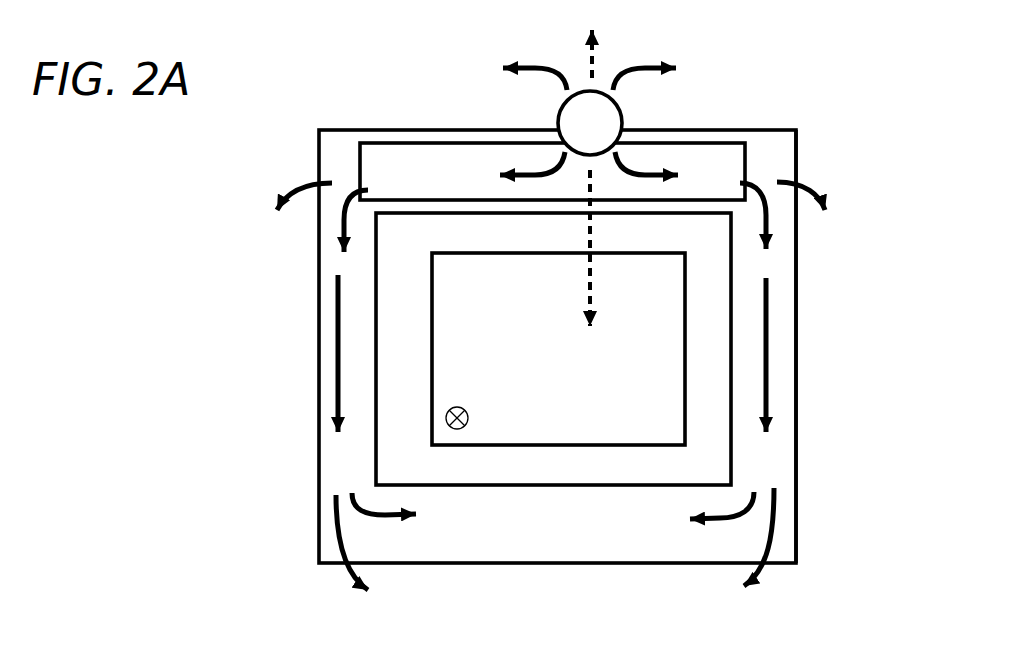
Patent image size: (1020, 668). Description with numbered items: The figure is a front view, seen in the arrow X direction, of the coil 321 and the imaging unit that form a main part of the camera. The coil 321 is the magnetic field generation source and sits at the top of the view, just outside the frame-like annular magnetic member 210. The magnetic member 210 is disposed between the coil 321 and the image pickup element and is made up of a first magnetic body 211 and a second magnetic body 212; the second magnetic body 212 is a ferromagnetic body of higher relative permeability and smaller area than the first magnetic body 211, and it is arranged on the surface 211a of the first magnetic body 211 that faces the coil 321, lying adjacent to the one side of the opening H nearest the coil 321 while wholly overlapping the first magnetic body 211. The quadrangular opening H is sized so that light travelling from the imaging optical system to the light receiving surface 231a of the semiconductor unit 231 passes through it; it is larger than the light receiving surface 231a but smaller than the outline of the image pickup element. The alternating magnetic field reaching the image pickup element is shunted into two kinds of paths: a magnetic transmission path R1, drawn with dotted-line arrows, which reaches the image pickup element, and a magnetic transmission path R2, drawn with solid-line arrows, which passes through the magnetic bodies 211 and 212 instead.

The magnetic member 210 is at (598, 320).
The first magnetic body 211 is at (796, 460).
The surface 211a is at (782, 272).
The second magnetic body 212 is at (718, 157).
The semiconductor unit 231 is at (602, 447).
The light receiving surface 231a is at (458, 270).
The coil 321 is at (622, 117).
The opening H is at (411, 252).
The arrow X direction X is at (468, 411).
The magnetic transmission path R1 is at (593, 278).
The magnetic transmission path R2 is at (767, 352).